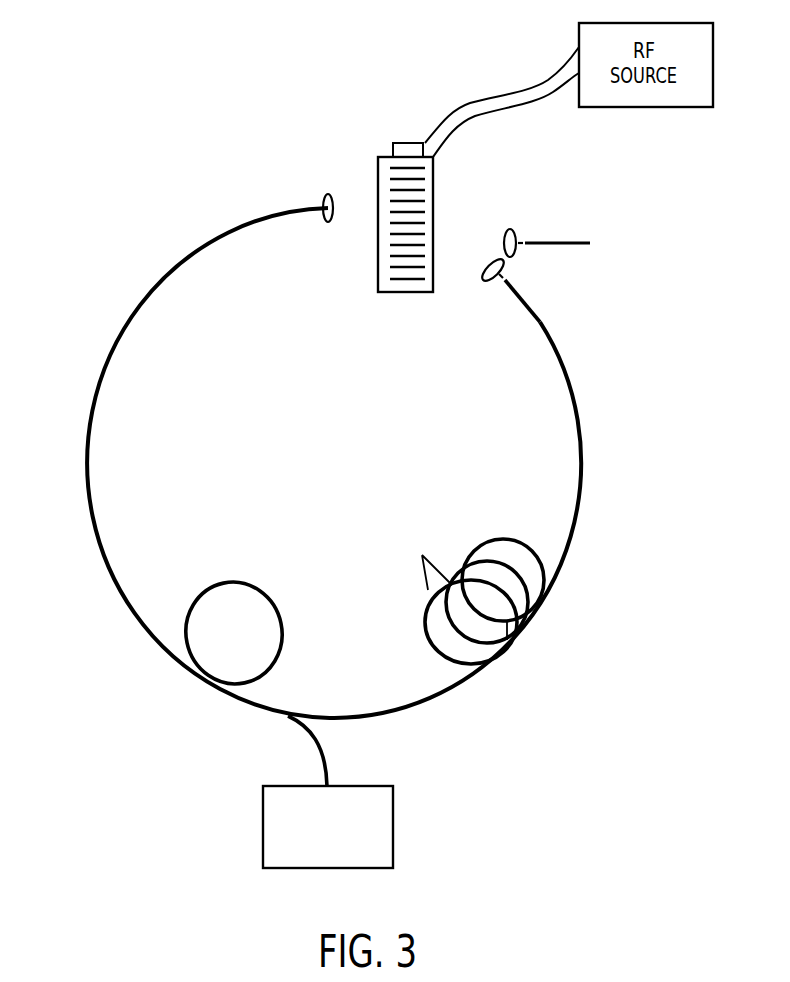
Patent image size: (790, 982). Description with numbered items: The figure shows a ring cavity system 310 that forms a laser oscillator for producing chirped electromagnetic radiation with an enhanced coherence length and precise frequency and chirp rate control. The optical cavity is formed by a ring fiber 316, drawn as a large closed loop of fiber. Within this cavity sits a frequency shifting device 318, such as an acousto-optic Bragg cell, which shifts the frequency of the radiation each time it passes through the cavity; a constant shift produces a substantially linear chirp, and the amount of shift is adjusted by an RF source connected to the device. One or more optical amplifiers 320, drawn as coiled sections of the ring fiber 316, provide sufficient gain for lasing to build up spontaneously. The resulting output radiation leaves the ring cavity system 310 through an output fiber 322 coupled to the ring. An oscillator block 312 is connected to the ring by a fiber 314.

The ring cavity system 310 is at (151, 100).
The oscillator 312 is at (263, 822).
The optical fiber to oscillator 314 is at (315, 742).
The ring fiber 316 is at (90, 527).
The frequency shifting device 318 is at (378, 277).
The optical amplifier 320 is at (283, 629).
The output fiber 322 is at (564, 241).